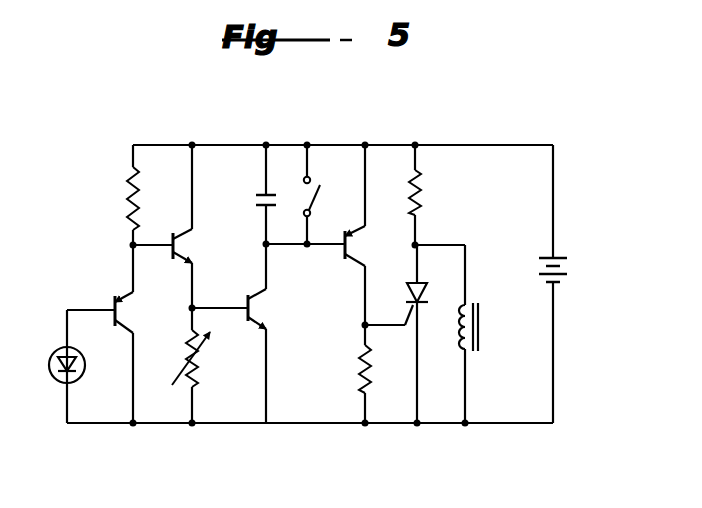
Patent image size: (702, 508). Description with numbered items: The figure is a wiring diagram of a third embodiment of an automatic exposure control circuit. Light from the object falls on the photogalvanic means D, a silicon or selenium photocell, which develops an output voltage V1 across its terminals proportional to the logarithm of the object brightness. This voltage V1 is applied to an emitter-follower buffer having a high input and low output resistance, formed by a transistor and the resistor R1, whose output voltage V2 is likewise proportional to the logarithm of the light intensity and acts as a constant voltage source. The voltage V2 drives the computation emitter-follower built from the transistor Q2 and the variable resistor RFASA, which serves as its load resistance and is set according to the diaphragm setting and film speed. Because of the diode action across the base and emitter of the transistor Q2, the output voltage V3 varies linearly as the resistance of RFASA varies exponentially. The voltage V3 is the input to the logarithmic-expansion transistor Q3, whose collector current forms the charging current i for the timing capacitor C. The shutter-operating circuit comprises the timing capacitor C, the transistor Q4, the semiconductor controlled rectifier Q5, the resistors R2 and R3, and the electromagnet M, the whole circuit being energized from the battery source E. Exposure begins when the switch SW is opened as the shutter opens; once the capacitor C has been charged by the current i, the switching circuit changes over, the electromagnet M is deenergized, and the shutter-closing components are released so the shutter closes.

The resistor R1 is at (138, 190).
The resistor R2 is at (362, 381).
The resistor R3 is at (424, 195).
The variable resistor RFASA is at (196, 381).
The timing capacitor C is at (256, 196).
The switch SW is at (313, 198).
The transistor Q2 is at (187, 242).
The transistor Q3 is at (263, 303).
The transistor Q4 is at (360, 243).
The semiconductor controlled rectifier Q5 is at (421, 308).
The electromagnet M is at (480, 328).
The battery source E is at (541, 270).
The photogalvanic means D is at (53, 375).
The output voltage V1 is at (104, 313).
The output voltage V2 is at (157, 248).
The output voltage V3 is at (228, 311).
The charging current i is at (275, 384).